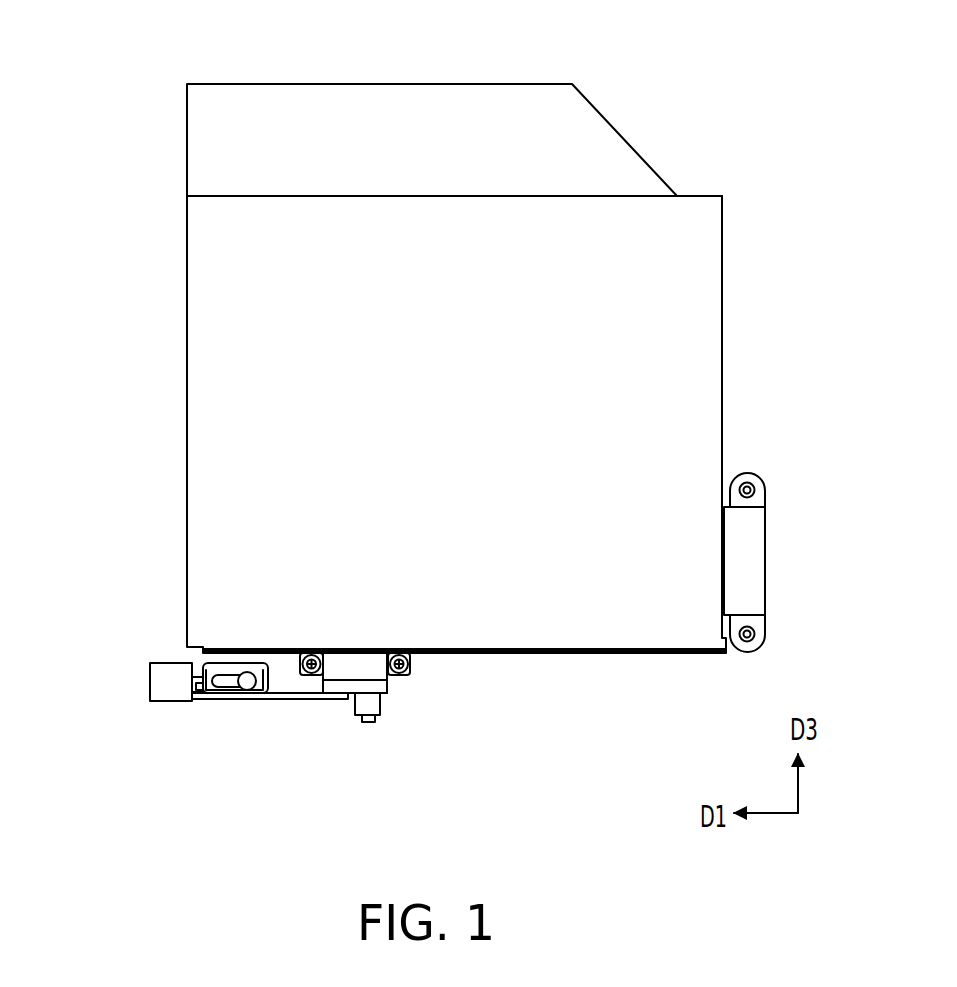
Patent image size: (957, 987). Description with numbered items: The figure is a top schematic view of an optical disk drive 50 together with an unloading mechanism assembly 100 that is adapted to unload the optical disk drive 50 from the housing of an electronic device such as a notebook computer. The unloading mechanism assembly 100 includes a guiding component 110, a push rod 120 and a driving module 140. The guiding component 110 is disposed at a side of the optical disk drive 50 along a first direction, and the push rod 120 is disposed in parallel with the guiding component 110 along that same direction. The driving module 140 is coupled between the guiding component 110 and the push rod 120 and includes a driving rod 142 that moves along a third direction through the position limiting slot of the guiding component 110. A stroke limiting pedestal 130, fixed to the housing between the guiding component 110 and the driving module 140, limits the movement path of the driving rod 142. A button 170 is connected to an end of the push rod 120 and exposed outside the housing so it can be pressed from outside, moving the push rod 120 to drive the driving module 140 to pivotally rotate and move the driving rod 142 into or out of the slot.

The optical disk drive 50 is at (375, 127).
The unloading mechanism assembly 100 is at (336, 731).
The guiding component 110 is at (580, 657).
The push rod 120 is at (307, 699).
The stroke limiting pedestal 130 is at (380, 675).
The driving module 140 is at (382, 688).
The driving rod 142 is at (368, 722).
The button 170 is at (160, 682).